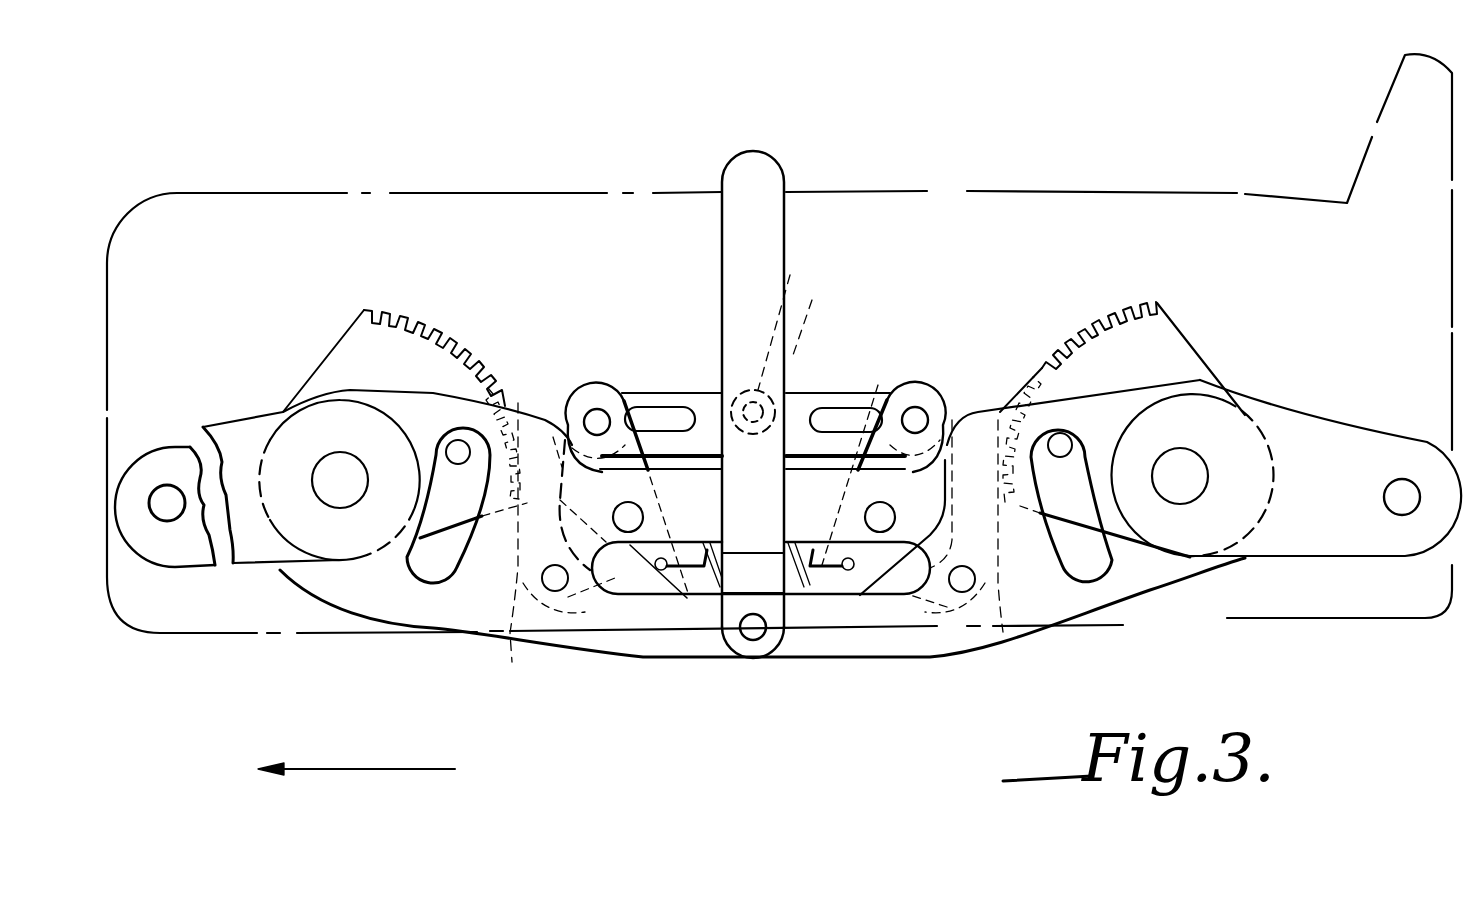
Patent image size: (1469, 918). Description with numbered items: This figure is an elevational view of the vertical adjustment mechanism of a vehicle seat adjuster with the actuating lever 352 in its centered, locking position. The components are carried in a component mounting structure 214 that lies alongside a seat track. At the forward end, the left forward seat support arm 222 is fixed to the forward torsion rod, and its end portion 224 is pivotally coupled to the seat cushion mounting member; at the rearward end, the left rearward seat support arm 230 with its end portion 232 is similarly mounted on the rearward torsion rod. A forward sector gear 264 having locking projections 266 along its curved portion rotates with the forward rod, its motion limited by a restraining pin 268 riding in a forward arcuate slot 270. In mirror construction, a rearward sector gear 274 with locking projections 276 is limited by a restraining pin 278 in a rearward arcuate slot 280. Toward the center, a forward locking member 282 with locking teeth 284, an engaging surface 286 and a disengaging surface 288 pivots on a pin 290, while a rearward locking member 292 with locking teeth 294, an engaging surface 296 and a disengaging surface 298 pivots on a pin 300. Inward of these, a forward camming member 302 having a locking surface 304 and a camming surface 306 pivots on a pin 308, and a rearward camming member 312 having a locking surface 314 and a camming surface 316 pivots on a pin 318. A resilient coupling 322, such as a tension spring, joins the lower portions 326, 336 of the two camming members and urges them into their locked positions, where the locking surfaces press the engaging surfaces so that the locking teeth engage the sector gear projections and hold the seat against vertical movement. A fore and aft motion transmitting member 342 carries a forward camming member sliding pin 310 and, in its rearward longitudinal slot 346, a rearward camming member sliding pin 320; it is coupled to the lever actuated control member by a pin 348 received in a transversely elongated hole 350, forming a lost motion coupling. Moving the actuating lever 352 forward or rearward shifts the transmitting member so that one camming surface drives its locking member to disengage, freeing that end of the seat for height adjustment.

The component mounting structure 214 is at (436, 635).
The left forward seat support arm 222 is at (204, 420).
The end portion of left forward seat support arm 224 is at (148, 457).
The left rearward seat support arm 230 is at (1316, 422).
The end portion of left rearward seat support arm 232 is at (1412, 442).
The forward sector gear 264 is at (322, 367).
The locking projections 266 is at (425, 323).
The restraining pin 268 is at (448, 445).
The forward arcuate slot 270 is at (420, 590).
The rearward sector gear 274 is at (1193, 352).
The locking projections 276 is at (1105, 317).
The restraining pin 278 is at (1042, 352).
The rearward arcuate slot 280 is at (1112, 580).
The forward locking member 282 is at (559, 549).
The locking teeth 284 is at (505, 398).
The engaging surface 286 is at (648, 372).
The disengaging surface 288 is at (625, 596).
The pin 290 is at (560, 592).
The rearward locking member 292 is at (1003, 613).
The locking teeth 294 is at (1062, 438).
The engaging surface 296 is at (873, 400).
The disengaging surface 298 is at (937, 625).
The pin 300 is at (972, 587).
The forward camming member 302 is at (641, 404).
The locking surface 304 is at (557, 433).
The camming surface 306 is at (597, 580).
The pin 308 is at (597, 502).
The forward camming member sliding pin 310 is at (602, 416).
The rearward camming member 312 is at (848, 447).
The locking surface 314 is at (712, 390).
The camming surface 316 is at (903, 600).
The pin 318 is at (880, 507).
The rearward camming member sliding pin 320 is at (925, 412).
The resilient coupling 322 is at (833, 580).
The lower portion of forward camming member 326 is at (688, 598).
The lower portion of rearward camming member 336 is at (866, 594).
The fore and aft motion transmitting member 342 is at (646, 393).
The rearward longitudinal slot 346 is at (822, 412).
The pin 348 is at (790, 272).
The transversely elongated hole 350 is at (833, 313).
The actuating lever 352 is at (778, 178).